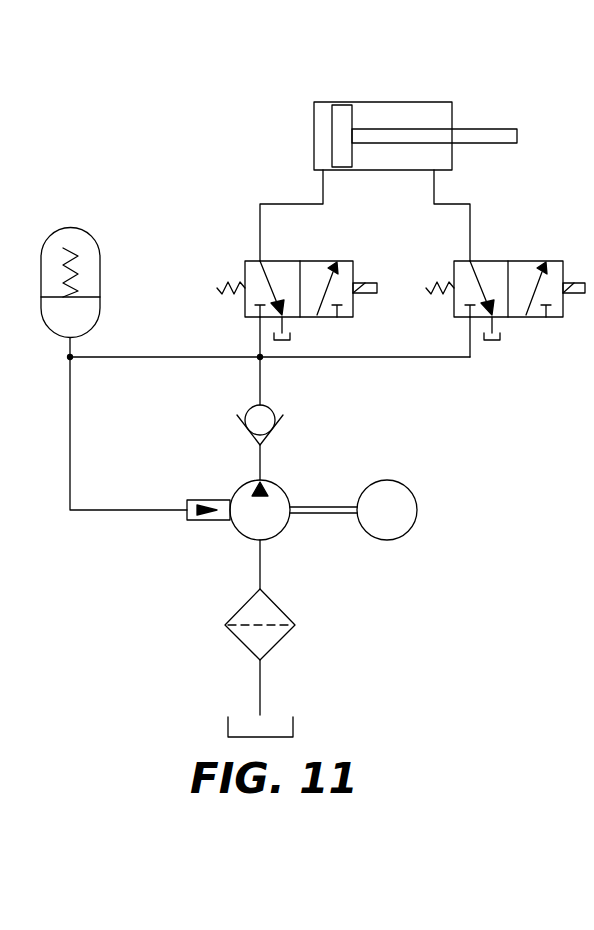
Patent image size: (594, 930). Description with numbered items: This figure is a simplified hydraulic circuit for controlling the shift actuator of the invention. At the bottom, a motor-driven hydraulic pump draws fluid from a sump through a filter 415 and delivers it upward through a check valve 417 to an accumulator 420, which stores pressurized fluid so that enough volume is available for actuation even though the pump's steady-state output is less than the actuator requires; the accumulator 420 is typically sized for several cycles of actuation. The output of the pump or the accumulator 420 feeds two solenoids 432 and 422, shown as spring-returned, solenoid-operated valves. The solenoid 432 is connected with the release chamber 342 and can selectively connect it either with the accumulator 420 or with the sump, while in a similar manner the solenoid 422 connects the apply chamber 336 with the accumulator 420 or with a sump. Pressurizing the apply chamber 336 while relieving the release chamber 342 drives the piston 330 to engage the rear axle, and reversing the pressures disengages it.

The piston 330 is at (337, 108).
The apply chamber 336 is at (426, 108).
The release chamber 342 is at (322, 128).
The solenoid 432 is at (245, 261).
The solenoid 422 is at (563, 261).
The accumulator 420 is at (92, 230).
The check valve 417 is at (278, 425).
The filter 415 is at (278, 538).